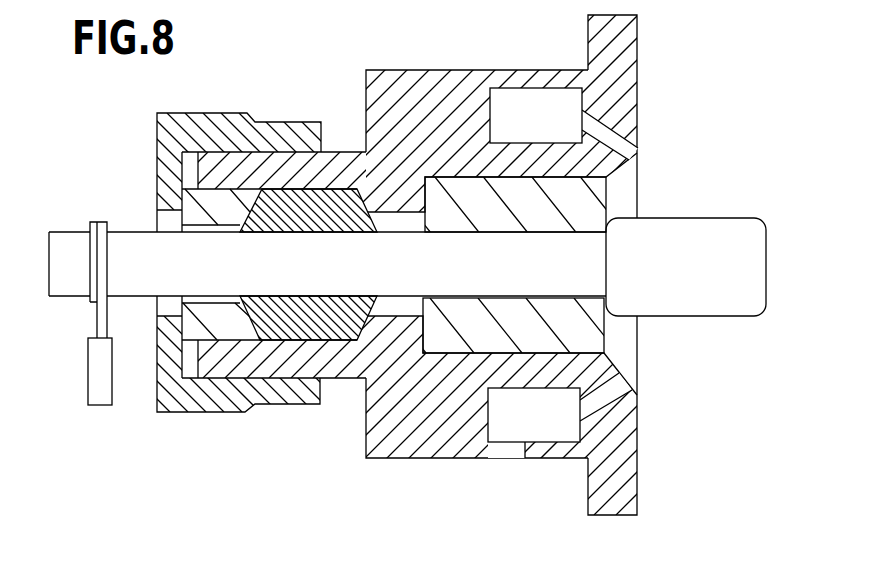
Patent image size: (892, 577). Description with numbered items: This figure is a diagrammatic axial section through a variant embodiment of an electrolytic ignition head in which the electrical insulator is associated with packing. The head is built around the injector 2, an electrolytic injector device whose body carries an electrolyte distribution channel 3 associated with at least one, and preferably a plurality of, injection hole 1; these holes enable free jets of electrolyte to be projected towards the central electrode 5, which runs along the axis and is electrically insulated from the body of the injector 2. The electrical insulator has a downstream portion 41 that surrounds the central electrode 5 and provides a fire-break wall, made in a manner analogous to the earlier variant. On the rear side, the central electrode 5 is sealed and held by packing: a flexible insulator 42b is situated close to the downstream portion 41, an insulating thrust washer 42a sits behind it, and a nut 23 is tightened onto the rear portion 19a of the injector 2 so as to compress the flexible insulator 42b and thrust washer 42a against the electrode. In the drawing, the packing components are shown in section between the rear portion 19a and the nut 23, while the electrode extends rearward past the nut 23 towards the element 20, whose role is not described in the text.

The injection hole 1 is at (627, 160).
The injector 2 is at (420, 97).
The electrolyte distribution channel 3 is at (537, 107).
The central electrode 5 is at (737, 240).
The rear portion of the injector 19a is at (323, 357).
The sensor 20 is at (100, 372).
The nut 23 is at (187, 400).
The downstream portion of the electrical insulator 41 is at (558, 290).
The insulating thrust washer 42a is at (212, 204).
The flexible insulator 42b is at (333, 212).